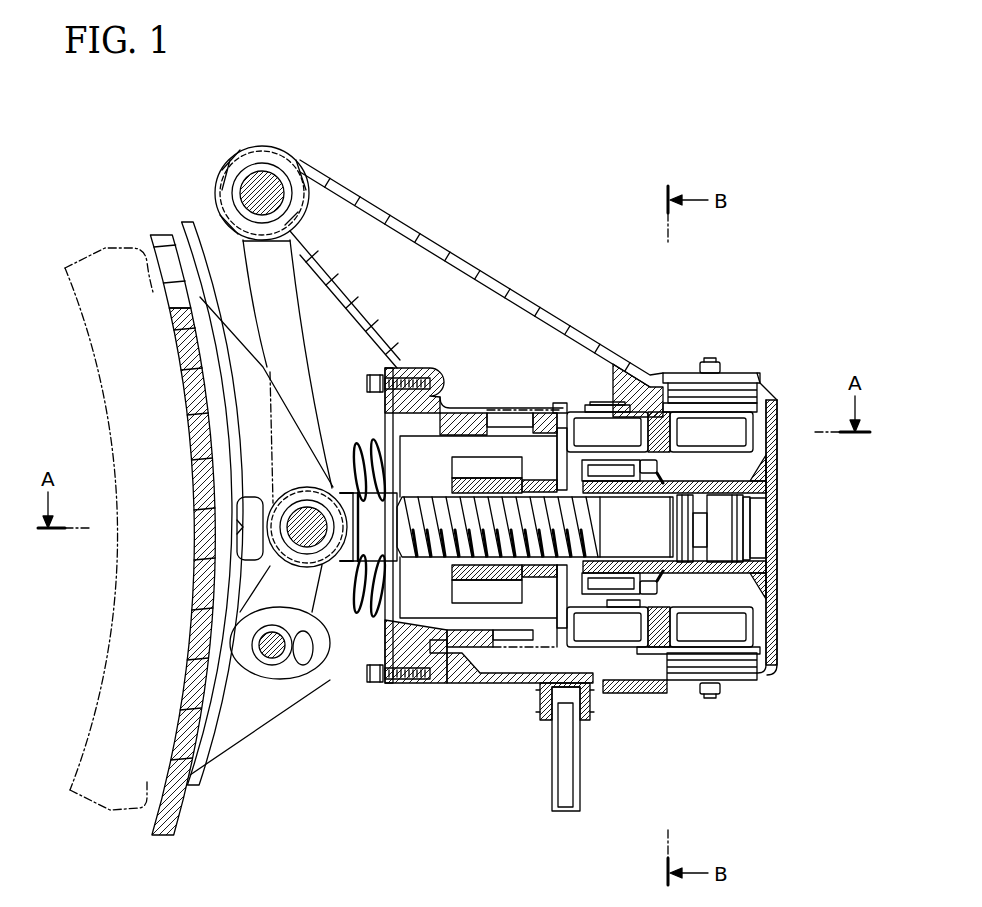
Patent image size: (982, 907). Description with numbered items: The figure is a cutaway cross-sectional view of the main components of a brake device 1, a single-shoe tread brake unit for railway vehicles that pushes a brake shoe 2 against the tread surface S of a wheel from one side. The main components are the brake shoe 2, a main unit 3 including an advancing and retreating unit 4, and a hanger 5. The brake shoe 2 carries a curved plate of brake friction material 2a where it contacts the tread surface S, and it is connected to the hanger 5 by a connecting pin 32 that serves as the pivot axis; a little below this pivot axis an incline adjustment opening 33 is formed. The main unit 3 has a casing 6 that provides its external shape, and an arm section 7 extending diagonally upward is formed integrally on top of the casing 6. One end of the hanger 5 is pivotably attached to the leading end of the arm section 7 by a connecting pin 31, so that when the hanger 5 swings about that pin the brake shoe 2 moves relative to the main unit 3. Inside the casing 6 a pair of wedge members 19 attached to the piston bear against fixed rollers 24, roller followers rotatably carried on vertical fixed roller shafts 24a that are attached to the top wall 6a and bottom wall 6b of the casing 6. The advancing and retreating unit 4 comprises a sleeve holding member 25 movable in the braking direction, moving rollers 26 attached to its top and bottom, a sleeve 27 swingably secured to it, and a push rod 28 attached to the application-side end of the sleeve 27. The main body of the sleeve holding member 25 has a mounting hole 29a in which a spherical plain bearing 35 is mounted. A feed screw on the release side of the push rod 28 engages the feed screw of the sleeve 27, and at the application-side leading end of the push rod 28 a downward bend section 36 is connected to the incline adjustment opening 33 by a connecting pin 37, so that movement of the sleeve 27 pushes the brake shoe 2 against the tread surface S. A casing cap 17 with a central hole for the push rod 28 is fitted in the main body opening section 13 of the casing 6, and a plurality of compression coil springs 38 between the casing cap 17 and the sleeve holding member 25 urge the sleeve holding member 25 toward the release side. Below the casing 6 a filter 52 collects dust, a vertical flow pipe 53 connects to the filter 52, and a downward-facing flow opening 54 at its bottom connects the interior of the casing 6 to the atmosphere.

The brake device 1 is at (526, 180).
The brake shoe 2 is at (227, 732).
The brake friction material 2a is at (181, 731).
The tread surface S is at (148, 798).
The main unit 3 is at (780, 407).
The advancing and retreating unit 4 is at (410, 660).
The hanger 5 is at (263, 263).
The casing 6 is at (465, 683).
The top wall 6a is at (770, 398).
The bottom wall 6b is at (646, 665).
The arm section 7 is at (363, 240).
The main body opening section 13 is at (413, 430).
The casing cap 17 is at (383, 426).
The wedge members 19 is at (655, 430).
The fixed rollers 24 is at (727, 432).
The fixed roller shafts 24a is at (736, 378).
The sleeve holding member 25 is at (615, 640).
The moving rollers 26 is at (575, 425).
The sleeve 27 is at (560, 575).
The push rod 28 is at (395, 620).
The mounting hole 29a is at (607, 413).
The connecting pin 31 is at (268, 186).
The connecting pin 32 is at (322, 536).
The incline adjustment opening 33 is at (300, 662).
The spherical plain bearing 35 is at (690, 480).
The bend section 36 is at (278, 597).
The connecting pin 37 is at (272, 650).
The compression coil springs 38 is at (558, 410).
The filter 52 is at (560, 710).
The flow pipe 53 is at (555, 770).
The flow opening 54 is at (566, 812).